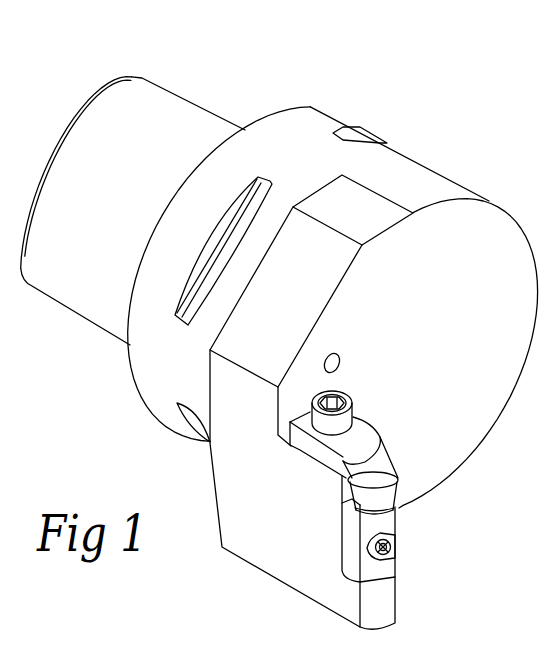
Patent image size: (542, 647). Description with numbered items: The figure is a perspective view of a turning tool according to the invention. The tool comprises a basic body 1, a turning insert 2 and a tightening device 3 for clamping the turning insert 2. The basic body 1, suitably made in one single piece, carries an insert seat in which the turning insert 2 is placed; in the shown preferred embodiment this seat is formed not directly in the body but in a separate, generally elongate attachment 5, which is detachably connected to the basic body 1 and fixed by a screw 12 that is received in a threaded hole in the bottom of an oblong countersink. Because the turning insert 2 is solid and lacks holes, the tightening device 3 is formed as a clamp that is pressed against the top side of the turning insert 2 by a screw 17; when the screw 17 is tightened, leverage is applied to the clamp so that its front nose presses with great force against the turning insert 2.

The basic body 1 is at (265, 104).
The turning insert 2 is at (401, 485).
The device for the clamping of the turning insert 3 is at (377, 443).
The attachment 5 is at (350, 542).
The screw 12 is at (393, 550).
The screw 17 is at (351, 400).